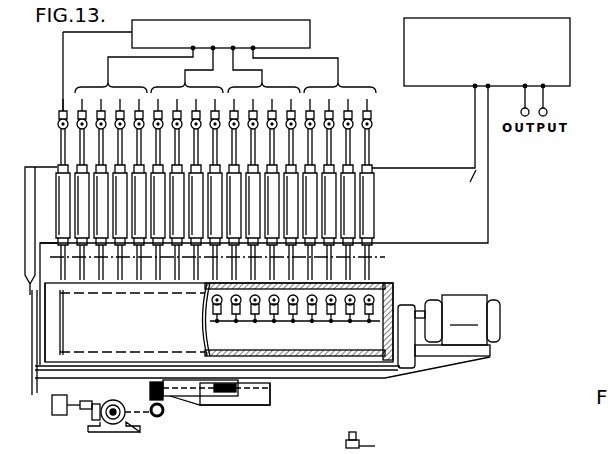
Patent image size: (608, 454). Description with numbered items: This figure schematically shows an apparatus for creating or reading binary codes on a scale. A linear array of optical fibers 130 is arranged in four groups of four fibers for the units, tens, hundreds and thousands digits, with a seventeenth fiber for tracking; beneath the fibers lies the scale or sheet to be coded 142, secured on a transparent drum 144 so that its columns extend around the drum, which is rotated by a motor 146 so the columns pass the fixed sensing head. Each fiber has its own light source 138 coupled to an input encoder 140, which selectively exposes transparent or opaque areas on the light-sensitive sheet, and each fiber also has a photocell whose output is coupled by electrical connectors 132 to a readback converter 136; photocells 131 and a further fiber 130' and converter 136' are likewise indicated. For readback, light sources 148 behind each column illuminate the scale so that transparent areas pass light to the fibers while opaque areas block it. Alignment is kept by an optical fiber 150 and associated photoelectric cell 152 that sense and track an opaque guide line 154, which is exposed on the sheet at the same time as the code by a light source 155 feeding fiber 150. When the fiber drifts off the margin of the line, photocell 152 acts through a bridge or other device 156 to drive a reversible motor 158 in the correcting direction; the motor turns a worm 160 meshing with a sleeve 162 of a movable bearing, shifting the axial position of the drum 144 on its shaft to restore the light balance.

The input encoder 140 is at (303, 35).
The readback converter 136 is at (487, 43).
The light source 138 is at (355, 122).
The light source 155 is at (58, 124).
The photocells 131 is at (308, 232).
The photoelectric cell 152 is at (60, 200).
The optical fibers 130 is at (302, 164).
The connectors 132 is at (488, 193).
The optical fiber 150 is at (58, 140).
The sheet to be coded 142 is at (386, 284).
The transparent drum 144 is at (372, 350).
The opaque guide line 154 is at (66, 332).
The light sources 148 is at (310, 303).
The motor 146 is at (449, 331).
The bridge or other device 156 is at (60, 413).
The reversible motor 158 is at (113, 426).
The worm 160 is at (150, 408).
The sleeve 162 is at (228, 407).
The optical fiber end 130' is at (336, 441).
The read back converter 136' is at (476, 444).